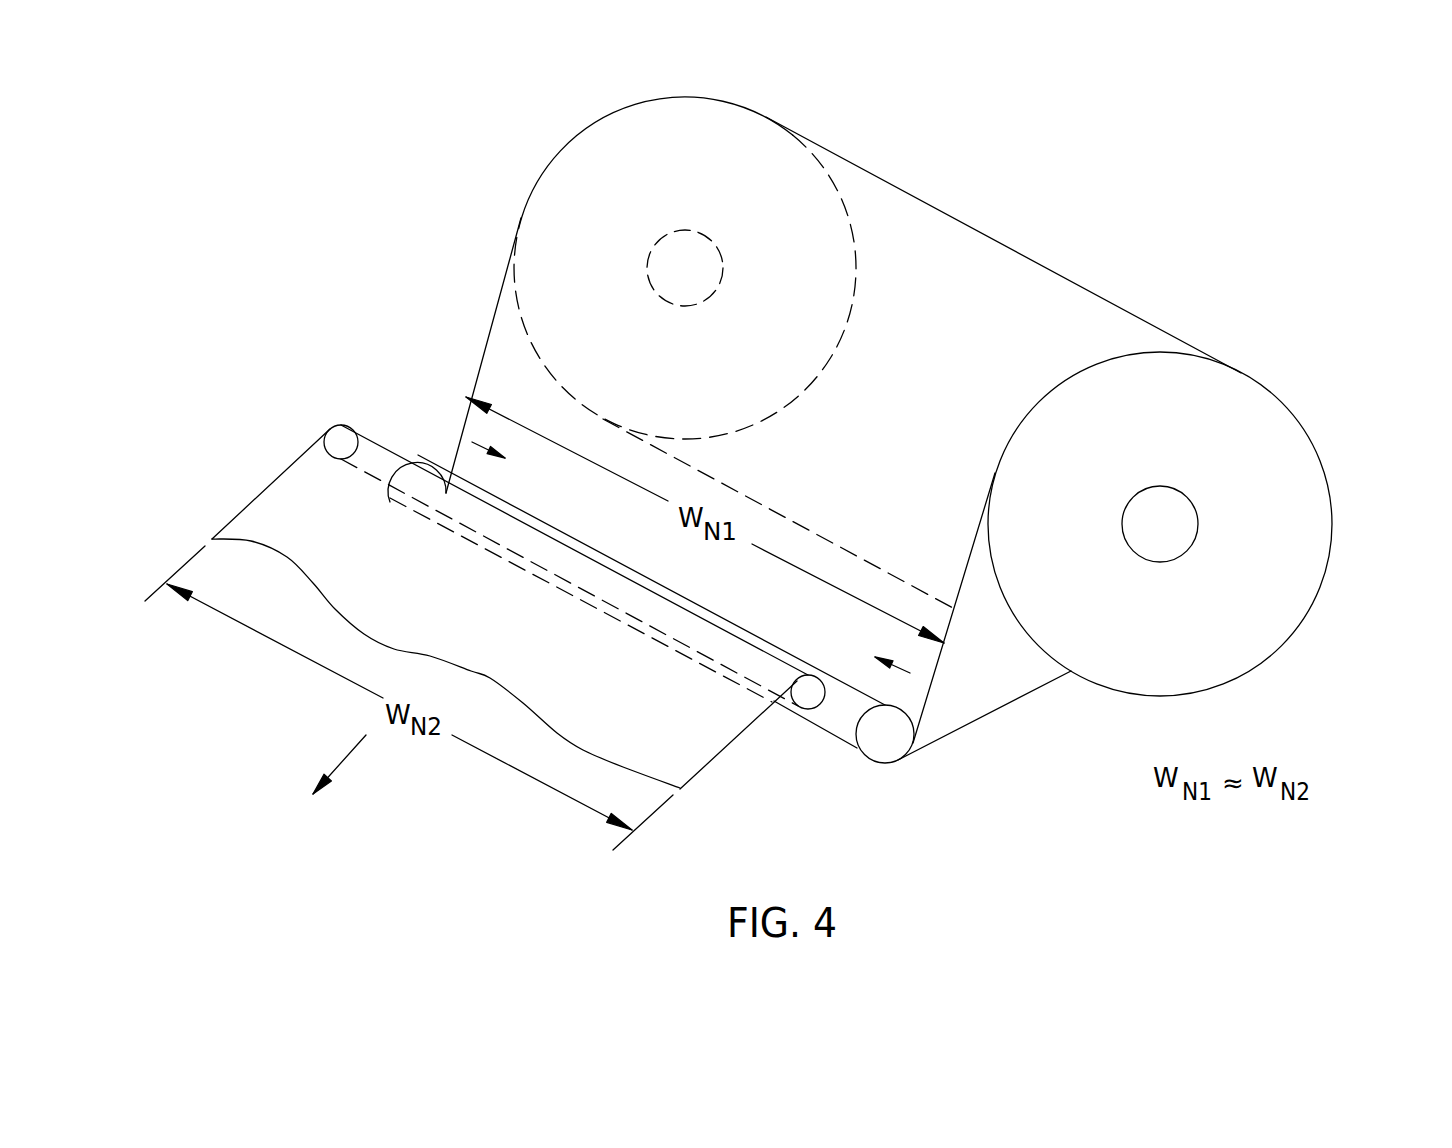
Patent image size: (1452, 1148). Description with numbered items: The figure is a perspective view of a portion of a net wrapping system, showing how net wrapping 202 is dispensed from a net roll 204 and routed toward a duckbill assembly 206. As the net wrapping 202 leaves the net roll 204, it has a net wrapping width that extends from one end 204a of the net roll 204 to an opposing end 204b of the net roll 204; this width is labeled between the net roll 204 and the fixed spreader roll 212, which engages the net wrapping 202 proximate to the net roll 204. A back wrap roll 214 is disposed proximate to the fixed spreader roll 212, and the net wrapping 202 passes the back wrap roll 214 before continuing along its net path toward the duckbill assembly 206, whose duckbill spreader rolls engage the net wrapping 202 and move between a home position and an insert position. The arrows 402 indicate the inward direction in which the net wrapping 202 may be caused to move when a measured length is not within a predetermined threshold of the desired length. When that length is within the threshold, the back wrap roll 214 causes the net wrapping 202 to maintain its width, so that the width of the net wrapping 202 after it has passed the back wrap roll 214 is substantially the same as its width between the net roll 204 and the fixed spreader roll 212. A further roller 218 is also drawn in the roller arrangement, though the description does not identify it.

The net wrapping 202 is at (977, 257).
The net roll 204 is at (1252, 427).
The end of net roll 204a is at (593, 150).
The opposing end of net roll 204b is at (1294, 512).
The duckbill assembly 206 is at (292, 797).
The fixed spreader roll 212 is at (895, 740).
The back wrap roll 214 is at (810, 697).
The roller 218 is at (852, 707).
The arrows 402 is at (483, 447).